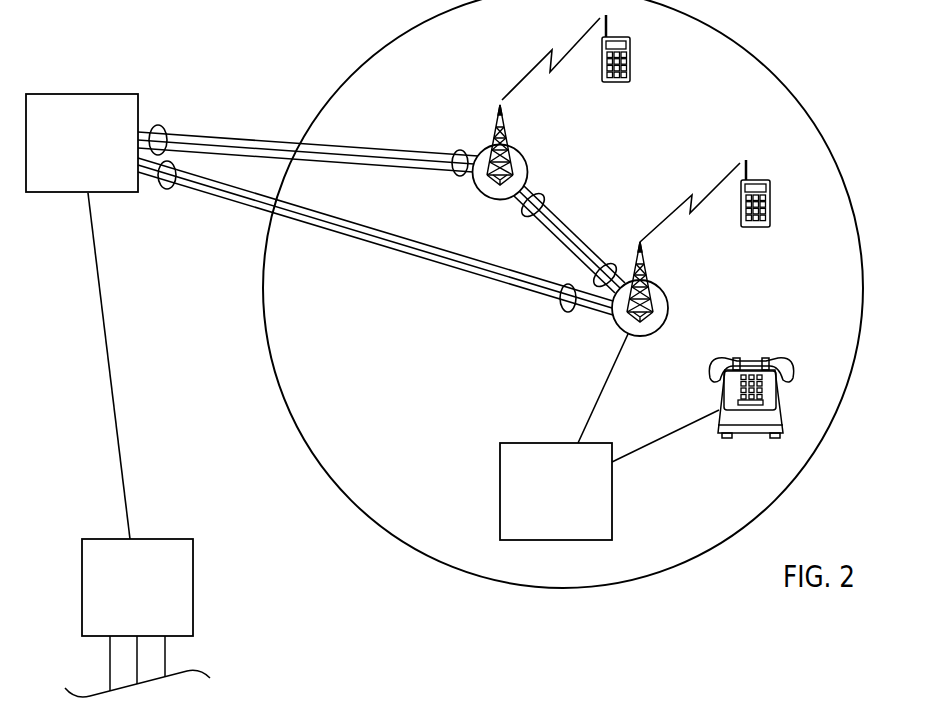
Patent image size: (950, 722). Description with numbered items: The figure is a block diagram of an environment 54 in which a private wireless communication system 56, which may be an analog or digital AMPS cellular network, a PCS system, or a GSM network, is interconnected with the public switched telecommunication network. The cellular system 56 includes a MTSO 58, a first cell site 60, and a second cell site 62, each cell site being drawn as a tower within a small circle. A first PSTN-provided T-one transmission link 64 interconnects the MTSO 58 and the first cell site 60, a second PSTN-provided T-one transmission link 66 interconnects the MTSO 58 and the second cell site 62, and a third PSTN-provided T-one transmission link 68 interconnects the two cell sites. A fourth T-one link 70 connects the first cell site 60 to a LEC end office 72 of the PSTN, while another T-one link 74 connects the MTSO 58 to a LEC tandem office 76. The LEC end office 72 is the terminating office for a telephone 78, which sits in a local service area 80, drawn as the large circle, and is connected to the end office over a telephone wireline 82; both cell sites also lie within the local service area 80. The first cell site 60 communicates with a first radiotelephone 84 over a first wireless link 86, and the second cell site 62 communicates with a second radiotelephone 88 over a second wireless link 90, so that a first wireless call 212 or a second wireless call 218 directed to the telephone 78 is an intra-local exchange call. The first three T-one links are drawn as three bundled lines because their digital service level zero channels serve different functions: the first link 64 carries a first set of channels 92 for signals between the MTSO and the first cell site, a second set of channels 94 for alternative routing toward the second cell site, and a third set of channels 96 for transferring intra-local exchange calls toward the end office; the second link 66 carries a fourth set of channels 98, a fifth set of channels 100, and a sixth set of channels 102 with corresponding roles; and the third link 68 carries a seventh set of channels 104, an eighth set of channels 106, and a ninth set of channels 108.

The environment 54 is at (860, 519).
The private wireless communication system 56 is at (288, 80).
The MTSO 58 is at (67, 93).
The first cell site 60 is at (657, 331).
The second cell site 62 is at (475, 184).
The first PSTN-provided T-1 transmission link 64 is at (227, 203).
The second PSTN-provided T-1 transmission link 66 is at (213, 137).
The third PSTN-provided T-1 transmission link 68 is at (545, 227).
The fourth PSTN T-1 transmission link 70 is at (605, 386).
The LEC end office 72 is at (523, 442).
The PSTN-provided T-1 transmission link 74 is at (121, 462).
The LEC tandem office 76 is at (165, 538).
The telephone 78 is at (752, 354).
The local service area 80 is at (750, 53).
The telephone wireline 82 is at (658, 440).
The first radiotelephone 84 is at (752, 228).
The first wireless link 86 is at (690, 206).
The second radiotelephone 88 is at (622, 82).
The second wireless link 90 is at (551, 61).
The first set of DS-0 channels 92 is at (392, 254).
The second set of DS-0 channels 94 is at (378, 248).
The third set of DS-0 channels 96 is at (363, 245).
The fourth set of DS-0 channels 98 is at (347, 146).
The fifth set of DS-0 channels 100 is at (362, 152).
The sixth set of DS-0 channels 102 is at (377, 158).
The seventh set of DS-0 channels 104 is at (560, 216).
The eighth set of DS-0 channels 106 is at (568, 229).
The ninth set of DS-0 channels 108 is at (580, 243).
The first wireless call 212 is at (715, 188).
The second wireless call 218 is at (526, 78).